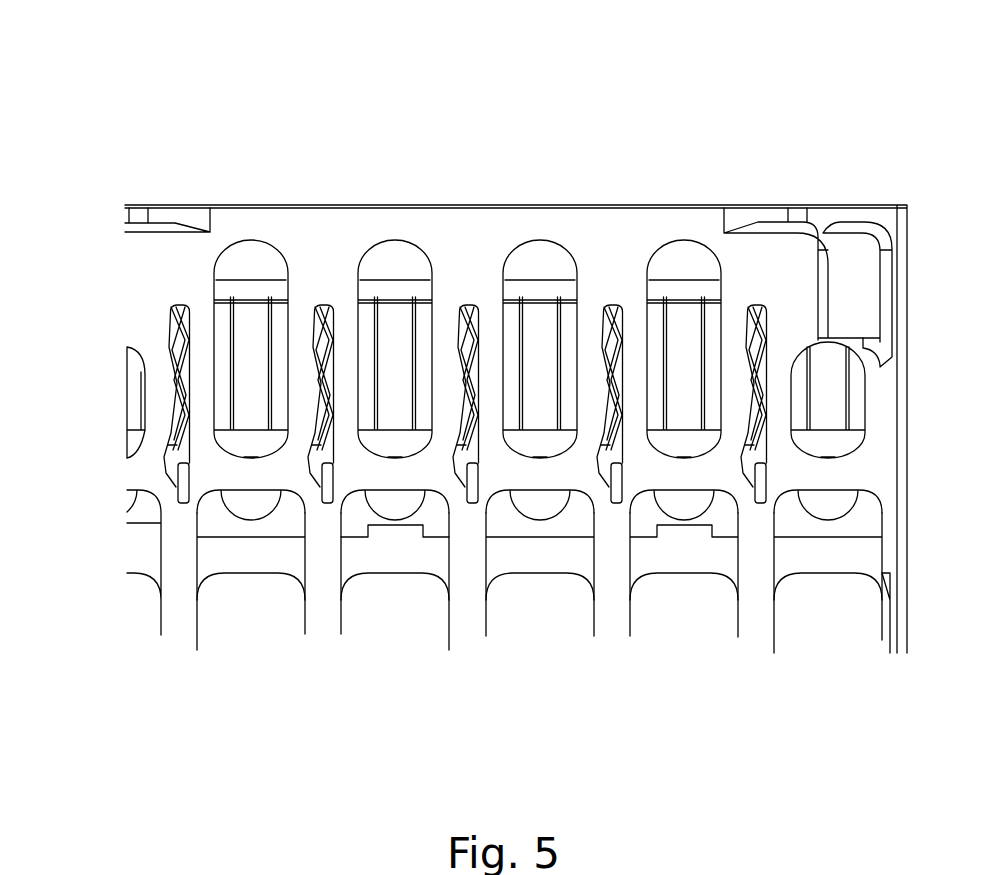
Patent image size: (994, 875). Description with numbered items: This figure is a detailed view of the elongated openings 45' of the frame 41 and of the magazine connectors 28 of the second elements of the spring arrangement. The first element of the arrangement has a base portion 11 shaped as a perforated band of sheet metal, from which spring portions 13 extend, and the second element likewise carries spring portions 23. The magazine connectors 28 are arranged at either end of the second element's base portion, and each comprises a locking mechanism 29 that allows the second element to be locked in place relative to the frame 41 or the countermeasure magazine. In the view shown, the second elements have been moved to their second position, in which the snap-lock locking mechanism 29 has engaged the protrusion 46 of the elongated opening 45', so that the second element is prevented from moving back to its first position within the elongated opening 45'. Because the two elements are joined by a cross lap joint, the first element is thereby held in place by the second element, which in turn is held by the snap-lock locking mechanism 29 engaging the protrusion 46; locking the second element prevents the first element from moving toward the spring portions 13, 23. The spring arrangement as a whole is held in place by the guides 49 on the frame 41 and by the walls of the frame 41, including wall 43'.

The base portion 11 is at (502, 522).
The spring portions 13 is at (253, 395).
The spring portions 23 is at (458, 306).
The magazine connectors 28 is at (757, 478).
The locking mechanism 29 is at (178, 437).
The frame 41 is at (885, 207).
The wall 43' is at (284, 158).
The elongated opening 45' is at (808, 295).
The protrusion 46 is at (327, 390).
The guides 49 is at (397, 532).